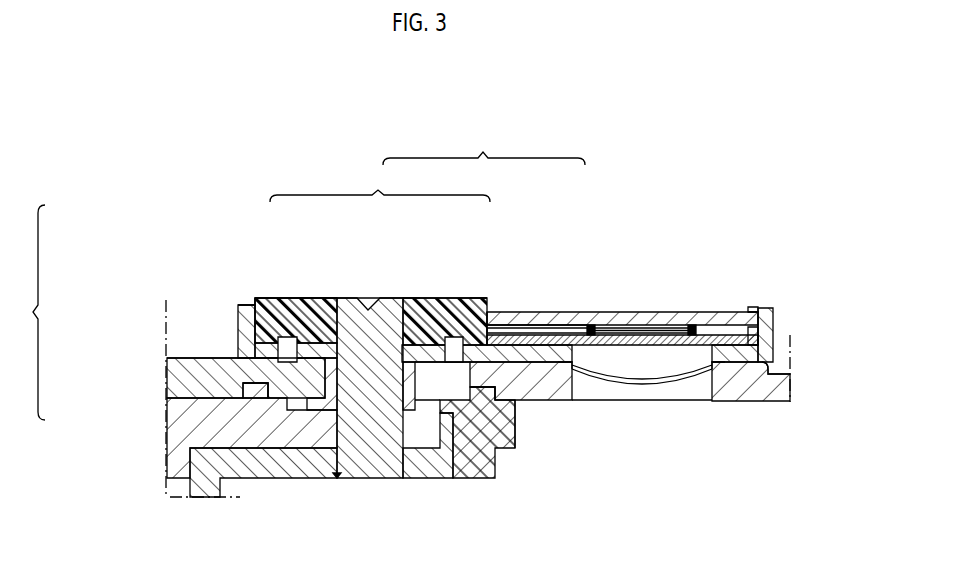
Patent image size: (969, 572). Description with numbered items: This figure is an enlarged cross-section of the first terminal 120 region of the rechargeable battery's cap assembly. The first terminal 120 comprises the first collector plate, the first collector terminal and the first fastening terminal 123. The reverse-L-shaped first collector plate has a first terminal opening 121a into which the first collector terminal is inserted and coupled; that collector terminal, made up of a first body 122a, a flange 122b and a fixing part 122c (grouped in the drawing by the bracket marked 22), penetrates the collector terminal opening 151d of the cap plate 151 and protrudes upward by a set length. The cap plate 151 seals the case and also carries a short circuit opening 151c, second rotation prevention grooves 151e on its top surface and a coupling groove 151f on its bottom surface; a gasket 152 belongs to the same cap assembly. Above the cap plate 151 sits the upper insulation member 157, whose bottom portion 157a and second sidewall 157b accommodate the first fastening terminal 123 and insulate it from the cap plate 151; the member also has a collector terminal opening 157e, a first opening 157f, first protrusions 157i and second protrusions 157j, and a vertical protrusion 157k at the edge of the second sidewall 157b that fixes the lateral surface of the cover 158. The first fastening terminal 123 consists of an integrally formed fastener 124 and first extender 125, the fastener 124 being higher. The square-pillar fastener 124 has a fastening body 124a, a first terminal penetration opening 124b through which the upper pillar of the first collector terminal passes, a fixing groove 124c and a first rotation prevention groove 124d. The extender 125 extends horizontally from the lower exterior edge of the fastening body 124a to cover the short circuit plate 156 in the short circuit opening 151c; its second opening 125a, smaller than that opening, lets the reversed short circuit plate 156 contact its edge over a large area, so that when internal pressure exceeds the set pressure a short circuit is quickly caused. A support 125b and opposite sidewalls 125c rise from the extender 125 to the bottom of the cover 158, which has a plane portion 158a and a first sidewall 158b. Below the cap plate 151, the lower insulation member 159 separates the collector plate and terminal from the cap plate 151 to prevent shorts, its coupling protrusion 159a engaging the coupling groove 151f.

The lens driving unit 22 is at (26, 312).
The first terminal 120 is at (214, 196).
The first terminal opening 121a is at (340, 476).
The first body 122a is at (360, 383).
The flange 122b is at (297, 428).
The fixing part 122c is at (328, 298).
The first fastening terminal 123 is at (484, 146).
The fastener 124 is at (372, 264).
The fastening body 124a is at (437, 300).
The first terminal penetration opening 124b is at (352, 300).
The fixing groove 124c is at (403, 300).
The first rotation prevention groove 124d is at (458, 300).
The first extender 125 is at (588, 326).
The second opening 125a is at (645, 328).
The support 125b is at (612, 325).
The opposite sidewalls 125c is at (527, 313).
The cap plate 151 is at (778, 393).
The short circuit opening 151c is at (703, 394).
The collector terminal opening 151d is at (420, 470).
The second rotation prevention grooves 151e is at (497, 300).
The coupling groove 151f is at (522, 419).
The gasket 152 is at (468, 479).
The short circuit plate 156 is at (677, 390).
The upper insulation member 157 is at (789, 301).
The bottom portion 157a is at (762, 375).
The second sidewall 157b is at (241, 322).
The collector terminal opening 157e is at (378, 360).
The first opening 157f is at (757, 356).
The first protrusions 157i is at (252, 337).
The second protrusions 157j is at (266, 381).
The vertical protrusion 157k is at (758, 315).
The cover 158 is at (713, 303).
The plane portion 158a is at (690, 325).
The first sidewall 158b is at (757, 312).
The lower insulation member 159 is at (488, 459).
The coupling protrusion 159a is at (480, 396).